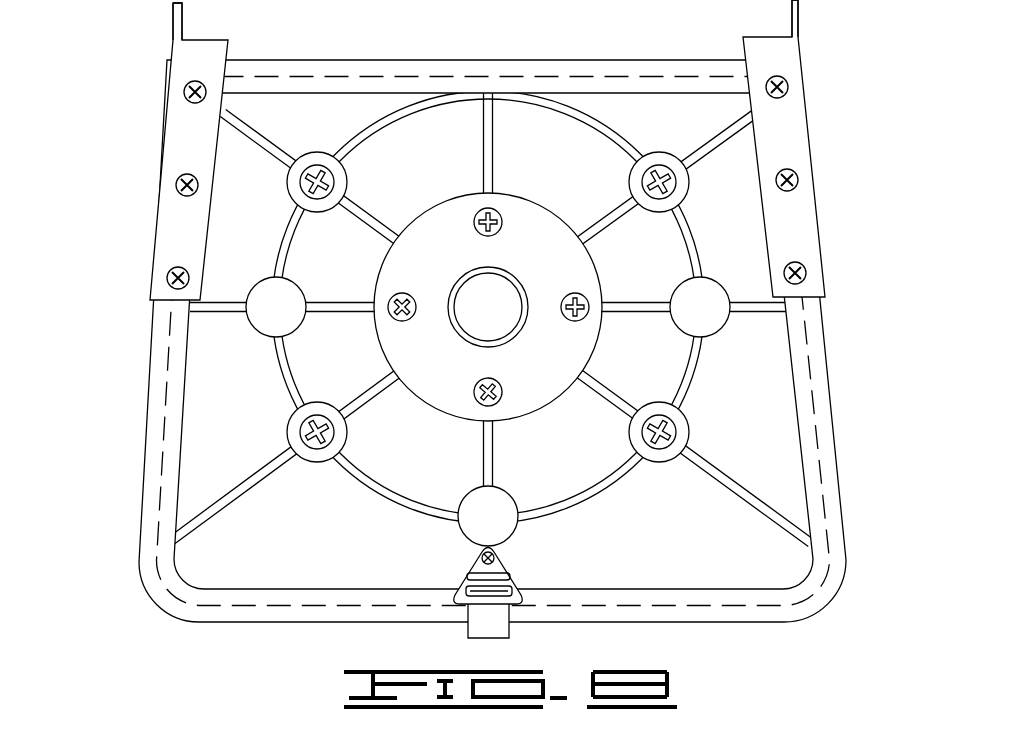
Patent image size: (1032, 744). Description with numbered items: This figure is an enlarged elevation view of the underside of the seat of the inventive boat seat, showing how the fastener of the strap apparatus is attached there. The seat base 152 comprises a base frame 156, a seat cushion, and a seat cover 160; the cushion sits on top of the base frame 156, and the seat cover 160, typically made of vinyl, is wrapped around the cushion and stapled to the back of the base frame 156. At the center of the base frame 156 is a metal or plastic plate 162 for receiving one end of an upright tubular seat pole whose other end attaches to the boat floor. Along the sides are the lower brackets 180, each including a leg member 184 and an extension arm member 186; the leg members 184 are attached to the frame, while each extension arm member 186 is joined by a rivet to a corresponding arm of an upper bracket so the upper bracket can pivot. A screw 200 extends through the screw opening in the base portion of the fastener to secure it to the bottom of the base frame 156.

The seat base 152 is at (762, 402).
The base frame 156 is at (203, 482).
The seat cover 160 is at (147, 435).
The plate 162 is at (585, 277).
The lower bracket 180 is at (190, 142).
The leg member 184 is at (182, 228).
The extension arm member 186 is at (176, 34).
The screw 200 is at (495, 553).